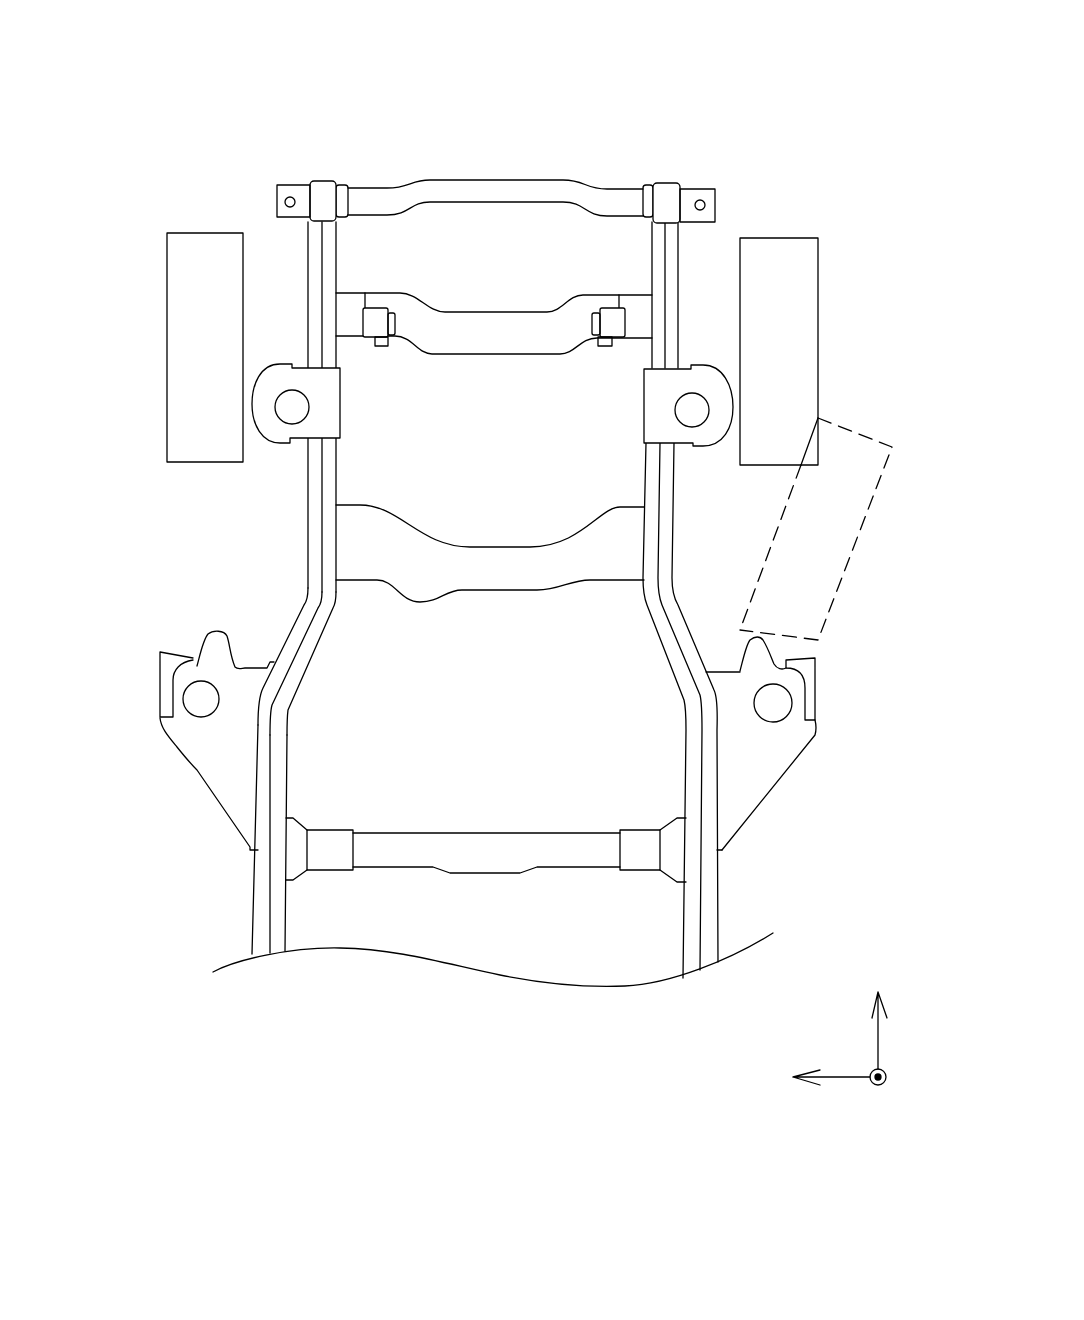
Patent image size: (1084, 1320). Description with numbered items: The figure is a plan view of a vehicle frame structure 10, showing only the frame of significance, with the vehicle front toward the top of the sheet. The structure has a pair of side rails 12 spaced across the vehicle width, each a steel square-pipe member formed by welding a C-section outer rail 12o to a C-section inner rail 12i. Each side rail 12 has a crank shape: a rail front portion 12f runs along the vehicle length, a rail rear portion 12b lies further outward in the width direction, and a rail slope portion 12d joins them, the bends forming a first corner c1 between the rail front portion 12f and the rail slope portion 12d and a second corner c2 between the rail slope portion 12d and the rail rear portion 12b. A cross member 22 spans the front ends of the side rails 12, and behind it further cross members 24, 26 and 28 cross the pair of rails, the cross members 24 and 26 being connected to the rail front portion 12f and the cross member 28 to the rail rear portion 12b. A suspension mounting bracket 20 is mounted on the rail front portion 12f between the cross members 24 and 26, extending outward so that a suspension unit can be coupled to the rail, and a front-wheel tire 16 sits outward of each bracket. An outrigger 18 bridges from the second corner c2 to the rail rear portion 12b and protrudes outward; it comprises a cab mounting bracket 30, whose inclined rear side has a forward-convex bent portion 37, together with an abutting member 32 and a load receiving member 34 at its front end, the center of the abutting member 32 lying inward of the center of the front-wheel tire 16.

The vehicle frame structure 10 is at (627, 112).
The side rail 12 is at (287, 537).
The rail front portion 12f is at (330, 258).
The inner rail 12i is at (332, 472).
The outer rail 12o is at (310, 482).
The rail slope portion 12d is at (307, 647).
The rail rear portion 12b is at (283, 918).
The first corner c1 is at (309, 590).
The second corner c2 is at (283, 697).
The front-wheel tire 16 is at (177, 348).
The outrigger 18 is at (170, 753).
The suspension mounting bracket 20 is at (330, 406).
The cross member 22 is at (468, 187).
The cross member 24 is at (490, 317).
The cross member 26 is at (483, 557).
The cross member 28 is at (498, 845).
The cab mounting bracket 30 is at (737, 792).
The abutting member 32 is at (758, 653).
The load receiving member 34 is at (812, 682).
The bent portion 37 is at (800, 777).